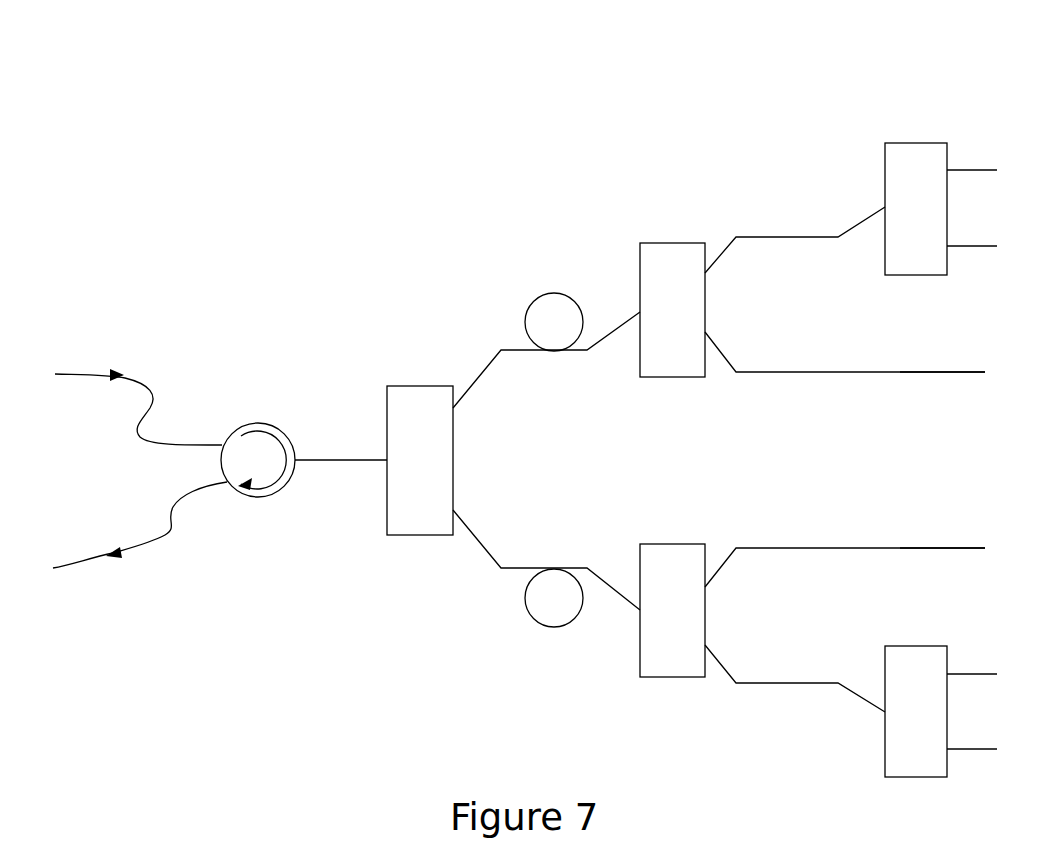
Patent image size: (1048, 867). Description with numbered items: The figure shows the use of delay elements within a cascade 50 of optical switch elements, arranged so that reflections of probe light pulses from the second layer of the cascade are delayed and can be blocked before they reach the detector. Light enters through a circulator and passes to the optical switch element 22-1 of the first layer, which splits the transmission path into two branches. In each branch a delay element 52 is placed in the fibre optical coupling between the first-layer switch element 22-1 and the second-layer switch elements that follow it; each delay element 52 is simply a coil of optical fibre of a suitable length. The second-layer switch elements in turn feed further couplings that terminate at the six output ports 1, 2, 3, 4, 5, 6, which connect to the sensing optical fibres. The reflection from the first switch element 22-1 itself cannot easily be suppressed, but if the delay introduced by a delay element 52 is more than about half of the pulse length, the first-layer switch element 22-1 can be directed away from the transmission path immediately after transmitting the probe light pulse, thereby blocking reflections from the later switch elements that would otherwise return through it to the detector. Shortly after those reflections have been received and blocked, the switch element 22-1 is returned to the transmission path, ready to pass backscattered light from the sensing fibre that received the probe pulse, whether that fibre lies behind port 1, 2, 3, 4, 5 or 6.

The cascade 50 is at (664, 158).
The optical switch element of the first layer 22-1 is at (403, 535).
The delay element 52 is at (545, 293).
The output port 1 is at (984, 172).
The output port 2 is at (984, 248).
The output port 3 is at (960, 372).
The output port 4 is at (959, 551).
The output port 5 is at (984, 679).
The output port 6 is at (984, 751).